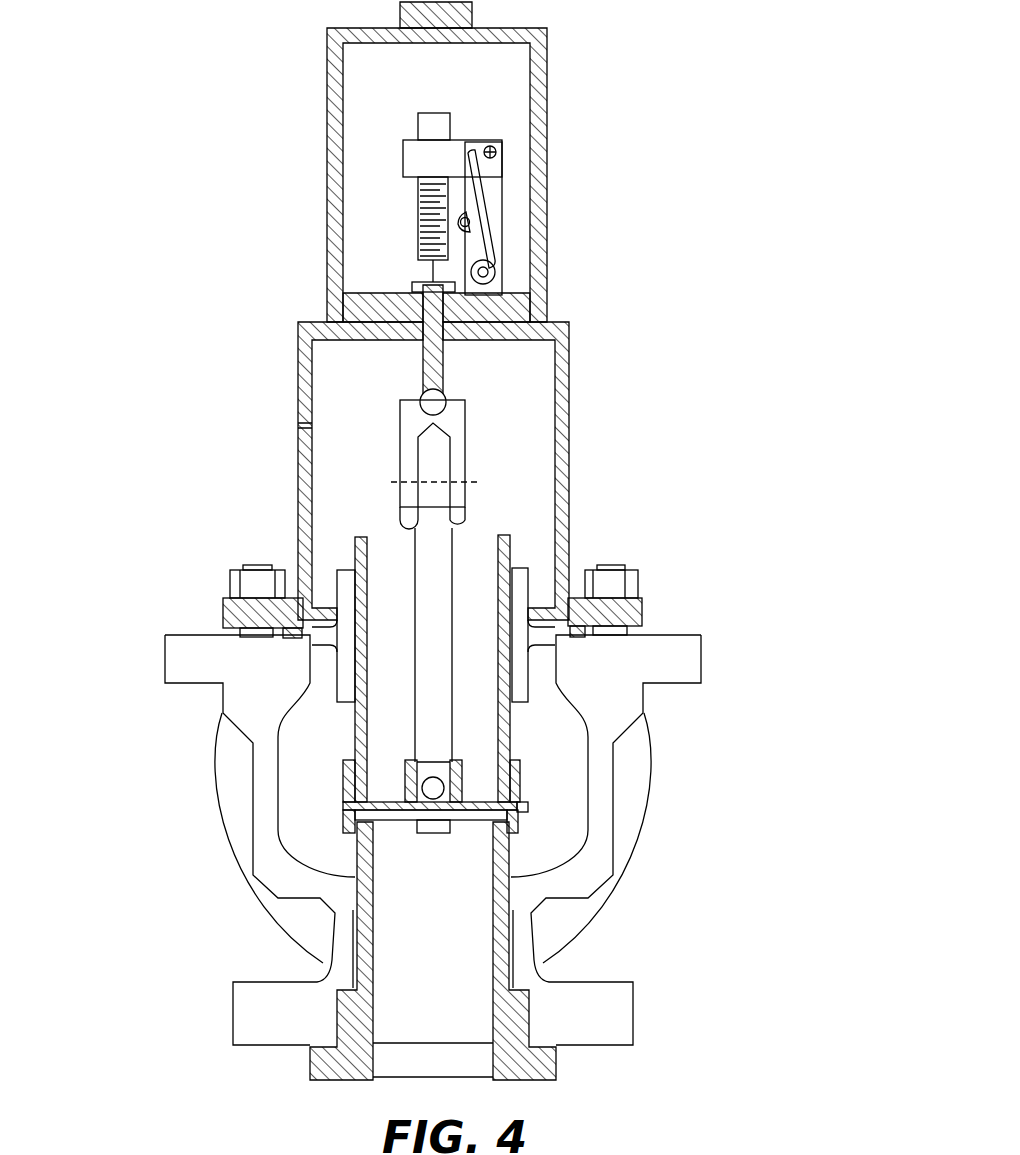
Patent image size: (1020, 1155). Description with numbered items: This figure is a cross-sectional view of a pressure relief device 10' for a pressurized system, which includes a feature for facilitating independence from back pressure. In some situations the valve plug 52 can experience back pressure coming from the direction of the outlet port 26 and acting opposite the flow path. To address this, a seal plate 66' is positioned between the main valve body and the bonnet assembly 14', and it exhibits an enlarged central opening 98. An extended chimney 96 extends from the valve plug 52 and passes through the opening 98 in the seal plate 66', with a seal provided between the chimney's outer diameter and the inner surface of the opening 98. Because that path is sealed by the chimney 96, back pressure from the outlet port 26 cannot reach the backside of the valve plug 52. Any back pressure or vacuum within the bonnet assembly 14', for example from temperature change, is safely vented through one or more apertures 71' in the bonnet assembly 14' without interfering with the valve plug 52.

The pressure relief device 10' is at (424, 541).
The bonnet assembly 14' is at (362, 162).
The apertures 71' is at (396, 471).
The extended chimney 96 is at (355, 537).
The central opening 98 is at (520, 552).
The seal plate 66' is at (432, 576).
The valve plug 52 is at (343, 815).
The outlet port 26 is at (575, 805).